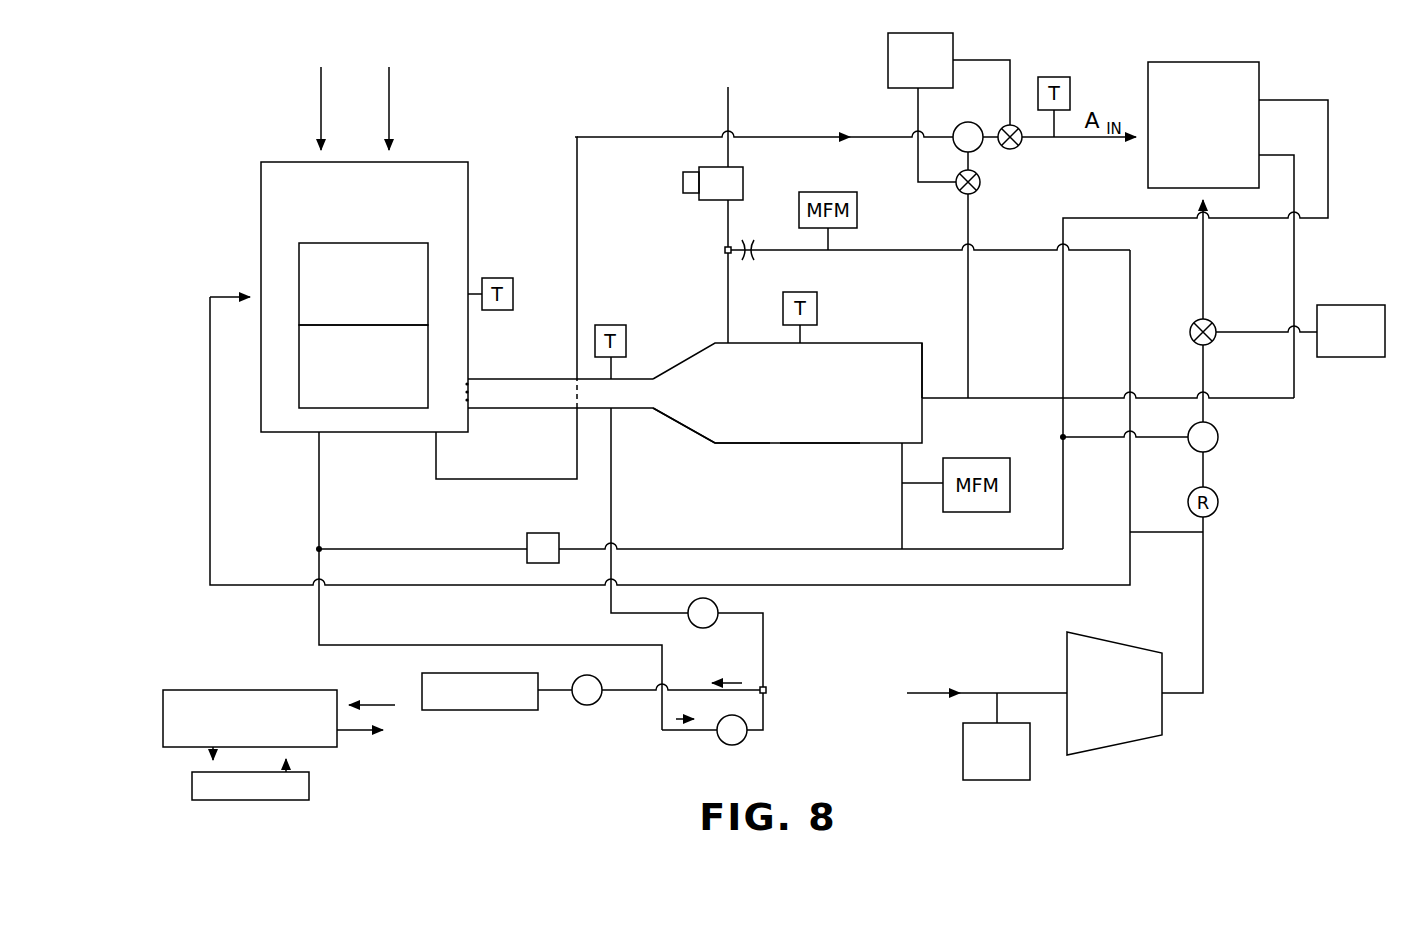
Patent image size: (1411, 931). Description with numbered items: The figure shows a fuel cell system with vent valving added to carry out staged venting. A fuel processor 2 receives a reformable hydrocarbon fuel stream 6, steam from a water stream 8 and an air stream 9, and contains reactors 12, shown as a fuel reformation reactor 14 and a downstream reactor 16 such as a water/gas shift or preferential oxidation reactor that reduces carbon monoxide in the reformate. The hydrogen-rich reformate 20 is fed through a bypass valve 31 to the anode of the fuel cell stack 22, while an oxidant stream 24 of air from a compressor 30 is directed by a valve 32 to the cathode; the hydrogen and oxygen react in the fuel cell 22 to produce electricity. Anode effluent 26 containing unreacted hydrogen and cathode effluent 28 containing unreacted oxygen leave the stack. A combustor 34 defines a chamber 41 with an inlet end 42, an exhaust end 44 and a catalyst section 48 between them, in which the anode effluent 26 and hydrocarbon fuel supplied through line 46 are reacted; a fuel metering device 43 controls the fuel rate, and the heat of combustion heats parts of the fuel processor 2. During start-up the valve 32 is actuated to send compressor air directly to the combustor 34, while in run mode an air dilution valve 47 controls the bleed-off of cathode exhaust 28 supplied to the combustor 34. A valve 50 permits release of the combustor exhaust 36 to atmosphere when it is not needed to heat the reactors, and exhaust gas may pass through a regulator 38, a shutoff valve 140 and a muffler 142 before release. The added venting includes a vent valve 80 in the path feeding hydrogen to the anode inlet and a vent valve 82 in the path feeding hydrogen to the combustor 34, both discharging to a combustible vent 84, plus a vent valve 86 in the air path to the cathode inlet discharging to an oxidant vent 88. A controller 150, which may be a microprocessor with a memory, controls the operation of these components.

The fuel processor 2 is at (238, 247).
The reformable hydrocarbon fuel stream 6 is at (321, 103).
The water stream 8 is at (389, 103).
The air stream 9 is at (210, 488).
The reactors 12 is at (430, 314).
The fuel reformation reactor 14 is at (428, 260).
The downstream reactor 16 is at (428, 364).
The hydrogen-rich reformate 20 is at (468, 480).
The fuel cell stack 22 is at (1191, 174).
The oxidant stream 24 is at (1204, 280).
The anode effluent 26 is at (1294, 191).
The cathode effluent 28 is at (1328, 130).
The compressor 30 is at (1067, 672).
The valve 31 is at (972, 124).
The valve 32 is at (1218, 437).
The combustor 34 is at (840, 334).
The combustor exhaust 36 is at (497, 402).
The regulator 38 is at (736, 745).
The chamber 41 is at (735, 435).
The inlet end 42 is at (917, 357).
The fuel metering device 43 is at (743, 178).
The exhaust end 44 is at (690, 413).
The hydrocarbon fuel line 46 is at (728, 307).
The air dilution valve 47 is at (549, 533).
The catalyst section 48 is at (807, 435).
The valve 50 is at (711, 626).
The vent valve 80 is at (1021, 146).
The vent valve 82 is at (982, 188).
The combustible vent 84 is at (888, 73).
The vent valve 86 is at (1210, 342).
The oxidant vent 88 is at (1351, 305).
The shutoff valve 140 is at (597, 703).
The muffler 142 is at (477, 710).
The controller 150 is at (238, 678).